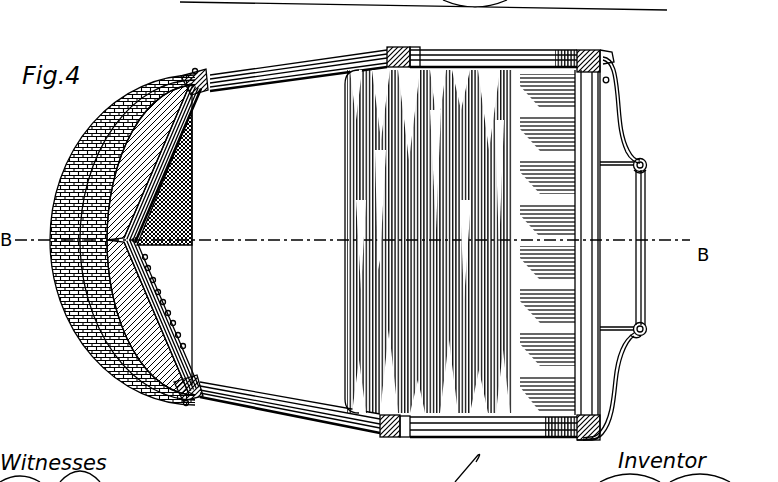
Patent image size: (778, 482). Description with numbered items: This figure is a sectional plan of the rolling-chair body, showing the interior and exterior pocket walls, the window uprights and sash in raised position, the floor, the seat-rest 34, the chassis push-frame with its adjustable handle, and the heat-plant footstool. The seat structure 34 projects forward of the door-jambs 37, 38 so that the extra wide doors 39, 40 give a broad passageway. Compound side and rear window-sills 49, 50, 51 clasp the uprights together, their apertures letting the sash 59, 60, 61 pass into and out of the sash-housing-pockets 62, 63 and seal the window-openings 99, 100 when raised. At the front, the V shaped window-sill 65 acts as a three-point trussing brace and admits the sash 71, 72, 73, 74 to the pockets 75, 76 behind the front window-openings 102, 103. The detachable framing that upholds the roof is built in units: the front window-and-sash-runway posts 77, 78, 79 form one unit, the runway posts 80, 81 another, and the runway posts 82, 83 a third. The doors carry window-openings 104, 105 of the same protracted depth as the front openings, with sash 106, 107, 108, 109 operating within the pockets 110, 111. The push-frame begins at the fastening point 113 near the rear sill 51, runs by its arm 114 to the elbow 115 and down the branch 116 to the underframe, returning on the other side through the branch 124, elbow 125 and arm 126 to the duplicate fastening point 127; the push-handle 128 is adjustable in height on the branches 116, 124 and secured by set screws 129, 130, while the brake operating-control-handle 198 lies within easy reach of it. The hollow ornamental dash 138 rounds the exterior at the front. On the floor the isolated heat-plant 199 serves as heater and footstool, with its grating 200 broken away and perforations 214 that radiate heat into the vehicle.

The seat-rest 34 is at (387, 125).
The door-jamb 37 is at (395, 63).
The door-jamb 38 is at (387, 437).
The door 39 is at (285, 68).
The door 40 is at (262, 407).
The window-sill 49 is at (437, 50).
The window-sill 50 is at (442, 430).
The rear window-sill 51 is at (590, 213).
The sash 59 is at (487, 58).
The sash 60 is at (472, 425).
The sash 61 is at (585, 283).
The sash-housing-pocket 62 is at (518, 50).
The sash-housing-pocket 63 is at (514, 437).
The V shaped window-sill 65 is at (154, 127).
The sash 71 is at (143, 163).
The sash 72 is at (143, 173).
The sash 73 is at (108, 357).
The sash 74 is at (152, 375).
The sash-housing-pocket 75 is at (193, 117).
The sash-housing-pocket 76 is at (187, 357).
The front window-and-sash-runway post 77 is at (190, 76).
The front window-and-sash-runway post 78 is at (62, 218).
The front window-and-sash-runway post 79 is at (181, 398).
The runway post 80 is at (405, 48).
The runway post 81 is at (587, 52).
The runway post 82 is at (395, 437).
The runway post 83 is at (580, 440).
The window-opening 99 is at (458, 64).
The window-opening 100 is at (527, 422).
The front window-opening 102 is at (148, 157).
The front window-opening 103 is at (83, 327).
The door window-opening 104 is at (238, 70).
The door window-opening 105 is at (242, 392).
The door sash 106 is at (337, 63).
The door sash 107 is at (320, 72).
The door sash 108 is at (315, 410).
The door sash 109 is at (288, 403).
The door pocket 110 is at (256, 88).
The door pocket 111 is at (258, 390).
The fastening point 113 is at (604, 60).
The arm 114 is at (620, 100).
The elbow 115 is at (633, 160).
The branch 116 is at (605, 168).
The branch 124 is at (610, 329).
The elbow 125 is at (633, 337).
The arm 126 is at (615, 383).
The fastening point 127 is at (598, 434).
The push-handle 128 is at (650, 235).
The set screw 129 is at (646, 173).
The set screw 130 is at (644, 328).
The exterior ornamental dash 138 is at (53, 258).
The operating-control-handle 198 is at (608, 80).
The heat-plant 199 is at (165, 275).
The grating 200 is at (192, 205).
The perforations 214 is at (170, 313).